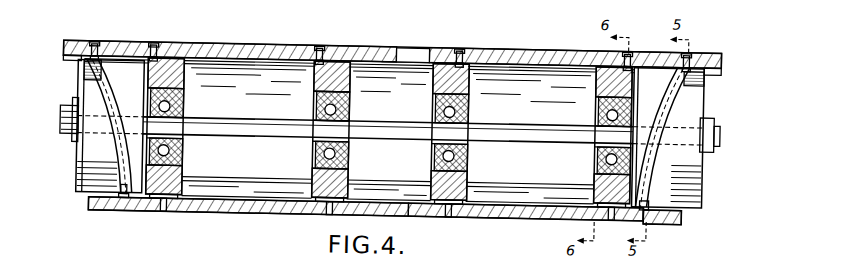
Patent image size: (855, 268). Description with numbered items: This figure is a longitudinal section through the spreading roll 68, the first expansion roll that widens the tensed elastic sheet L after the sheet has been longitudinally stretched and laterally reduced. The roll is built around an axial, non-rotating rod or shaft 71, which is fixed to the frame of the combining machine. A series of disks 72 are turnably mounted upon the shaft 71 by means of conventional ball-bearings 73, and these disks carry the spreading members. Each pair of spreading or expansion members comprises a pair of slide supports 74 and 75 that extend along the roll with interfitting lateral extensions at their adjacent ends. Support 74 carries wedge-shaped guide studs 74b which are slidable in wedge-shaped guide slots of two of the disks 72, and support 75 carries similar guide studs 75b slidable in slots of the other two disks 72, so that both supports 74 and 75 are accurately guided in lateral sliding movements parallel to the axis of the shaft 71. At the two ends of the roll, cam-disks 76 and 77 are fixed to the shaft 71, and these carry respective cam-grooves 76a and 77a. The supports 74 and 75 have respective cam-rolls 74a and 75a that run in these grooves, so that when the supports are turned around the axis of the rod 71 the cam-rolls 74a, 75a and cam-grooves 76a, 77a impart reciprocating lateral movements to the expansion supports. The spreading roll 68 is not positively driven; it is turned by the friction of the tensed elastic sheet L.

The spreading roll 68 is at (426, 42).
The rod or shaft 71 is at (248, 142).
The disks 72 is at (147, 75).
The ball-bearings 73 is at (183, 96).
The slide support 74 is at (220, 49).
The cam-roll 74a is at (83, 66).
The wedge-shaped guide stud 74b is at (155, 63).
The slide support 75 is at (518, 53).
The cam-roll 75a is at (717, 72).
The wedge-shaped guide stud 75b is at (630, 60).
The cam-disk 76 is at (85, 170).
The cam-groove 76a is at (90, 96).
The cam-disk 77 is at (678, 176).
The cam-groove 77a is at (658, 162).
The elastic sheet L is at (375, 46).